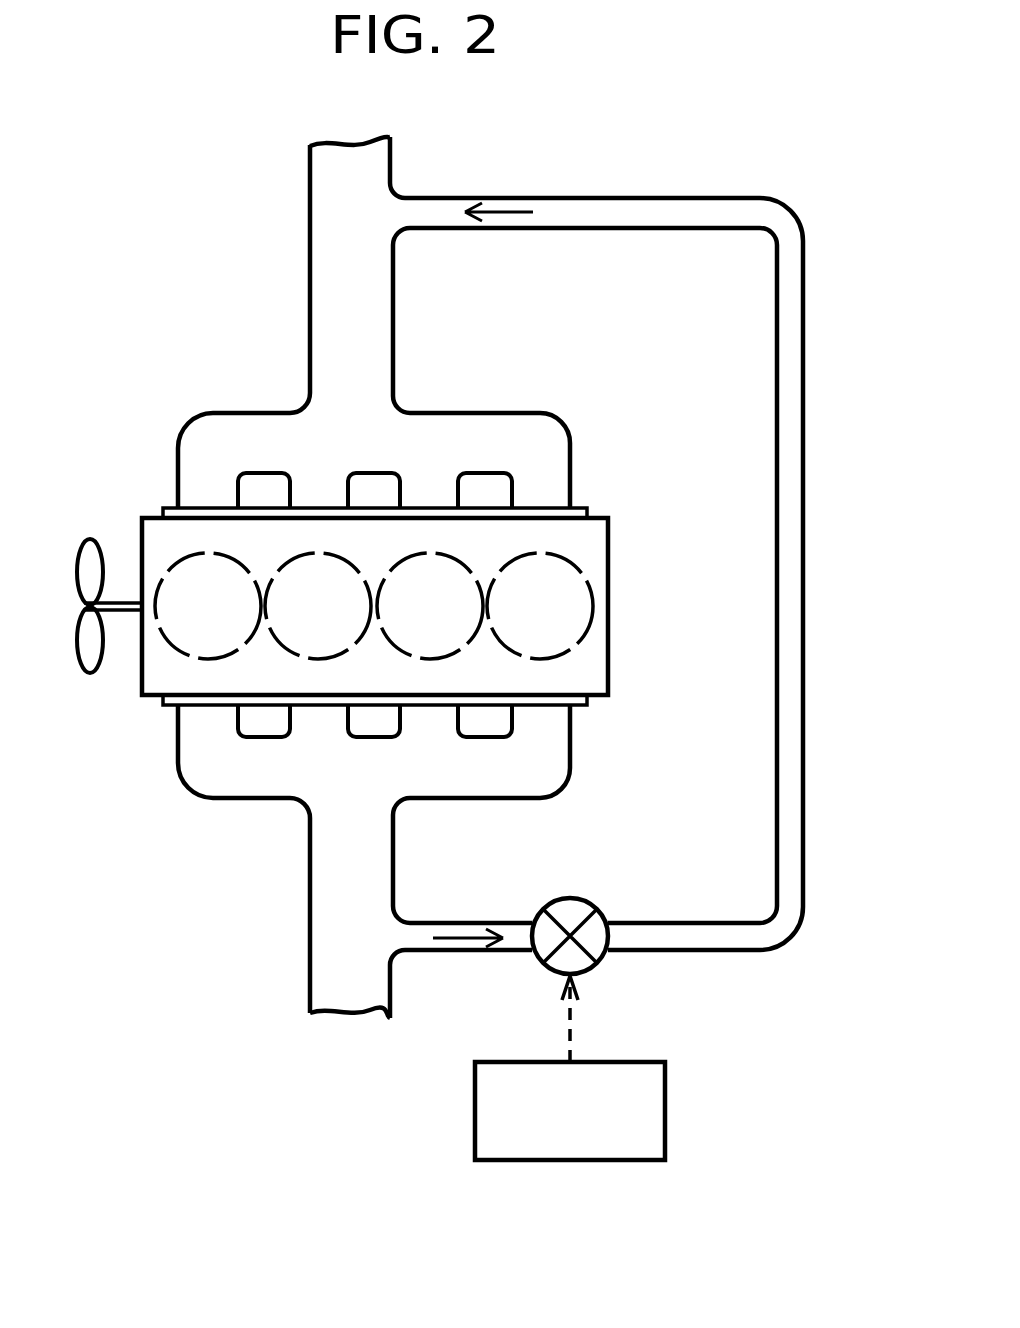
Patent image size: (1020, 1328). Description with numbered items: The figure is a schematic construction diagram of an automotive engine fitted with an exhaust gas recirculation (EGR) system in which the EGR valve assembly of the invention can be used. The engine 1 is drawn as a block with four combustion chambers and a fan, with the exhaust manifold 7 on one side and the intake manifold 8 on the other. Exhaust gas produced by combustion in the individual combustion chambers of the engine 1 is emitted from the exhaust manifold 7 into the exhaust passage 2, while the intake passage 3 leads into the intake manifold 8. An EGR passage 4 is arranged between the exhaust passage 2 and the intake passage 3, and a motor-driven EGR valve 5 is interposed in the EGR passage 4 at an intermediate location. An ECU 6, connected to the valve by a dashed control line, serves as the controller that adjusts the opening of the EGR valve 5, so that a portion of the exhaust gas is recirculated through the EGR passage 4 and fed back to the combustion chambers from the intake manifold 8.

The engine 1 is at (122, 517).
The exhaust passage 2 is at (303, 937).
The exhaust pipe 3 is at (292, 222).
The EGR passage 4 is at (783, 230).
The EGR valve 5 is at (578, 897).
The ECU 6 is at (667, 1108).
The exhaust manifold 7 is at (235, 768).
The intake manifold 8 is at (245, 430).